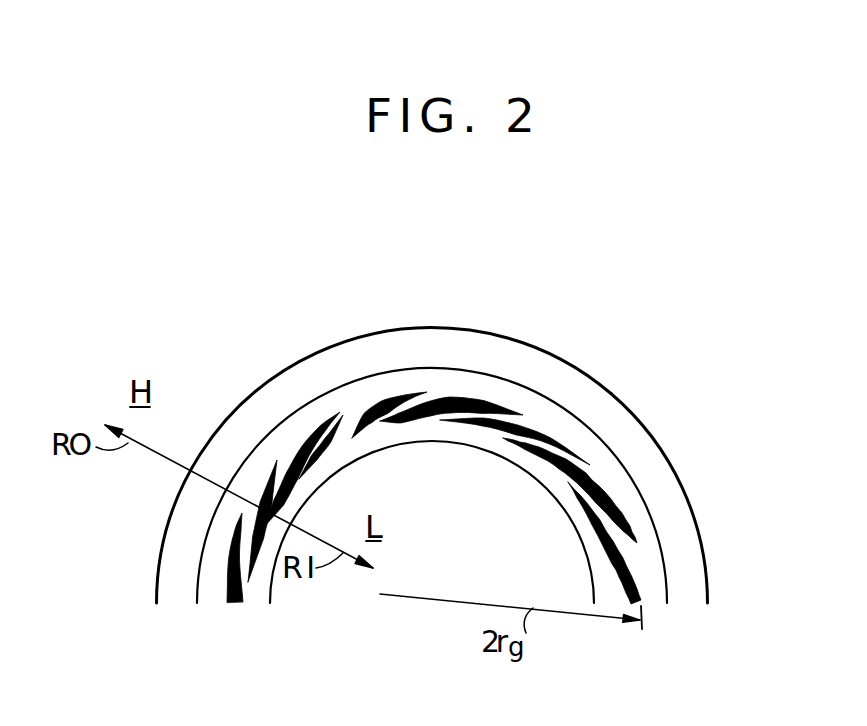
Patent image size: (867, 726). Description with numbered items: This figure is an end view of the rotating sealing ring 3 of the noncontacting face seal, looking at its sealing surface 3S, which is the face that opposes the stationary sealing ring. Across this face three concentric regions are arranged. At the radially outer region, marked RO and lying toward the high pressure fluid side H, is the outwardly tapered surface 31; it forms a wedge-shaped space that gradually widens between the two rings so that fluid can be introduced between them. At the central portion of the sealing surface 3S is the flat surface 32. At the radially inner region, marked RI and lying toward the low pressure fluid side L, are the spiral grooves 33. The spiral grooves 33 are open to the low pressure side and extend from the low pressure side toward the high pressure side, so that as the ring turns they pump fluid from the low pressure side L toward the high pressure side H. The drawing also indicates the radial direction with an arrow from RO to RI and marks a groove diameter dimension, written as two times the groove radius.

The rotating sealing ring 3 is at (612, 393).
The sealing surface 3S is at (550, 380).
The tapered surface 31 is at (668, 498).
The flat surface 32 is at (648, 557).
The spiral grooves 33 is at (597, 480).